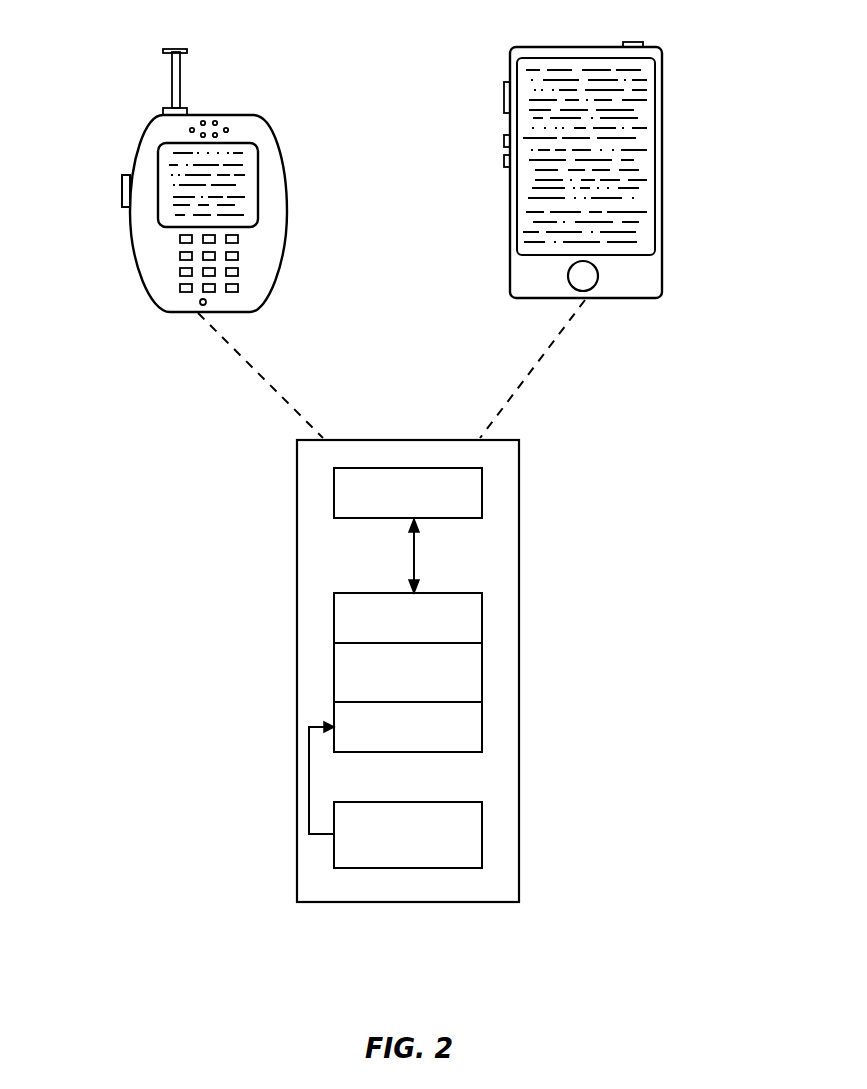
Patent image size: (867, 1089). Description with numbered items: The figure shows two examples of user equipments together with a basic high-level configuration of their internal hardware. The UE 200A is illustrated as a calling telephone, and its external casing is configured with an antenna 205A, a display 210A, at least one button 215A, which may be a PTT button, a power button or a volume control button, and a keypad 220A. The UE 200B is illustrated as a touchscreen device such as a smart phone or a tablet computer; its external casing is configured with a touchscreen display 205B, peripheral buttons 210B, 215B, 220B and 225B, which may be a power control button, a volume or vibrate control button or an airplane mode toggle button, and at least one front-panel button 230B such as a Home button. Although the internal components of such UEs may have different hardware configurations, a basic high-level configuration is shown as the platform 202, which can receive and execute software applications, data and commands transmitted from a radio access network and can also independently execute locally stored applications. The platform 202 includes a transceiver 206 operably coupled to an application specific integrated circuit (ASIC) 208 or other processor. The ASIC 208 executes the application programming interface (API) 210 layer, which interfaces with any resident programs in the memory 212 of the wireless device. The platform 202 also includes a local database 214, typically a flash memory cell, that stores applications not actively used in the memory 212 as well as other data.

The UE 200A is at (200, 189).
The antenna 205A is at (182, 72).
The display 210A is at (259, 183).
The button 215A is at (121, 189).
The keypad 220A is at (238, 256).
The UE 200B is at (583, 153).
The touchscreen display 205B is at (663, 80).
The peripheral button 210B is at (633, 42).
The peripheral button 215B is at (503, 98).
The peripheral button 220B is at (503, 140).
The peripheral button 225B is at (503, 161).
The front-panel button 230B is at (567, 277).
The platform 202 is at (297, 534).
The transceiver 206 is at (483, 490).
The application specific integrated circuit (ASIC) 208 is at (483, 617).
The application programming interface (API) layer 210 is at (483, 670).
The memory 212 is at (483, 726).
The local database 214 is at (483, 834).